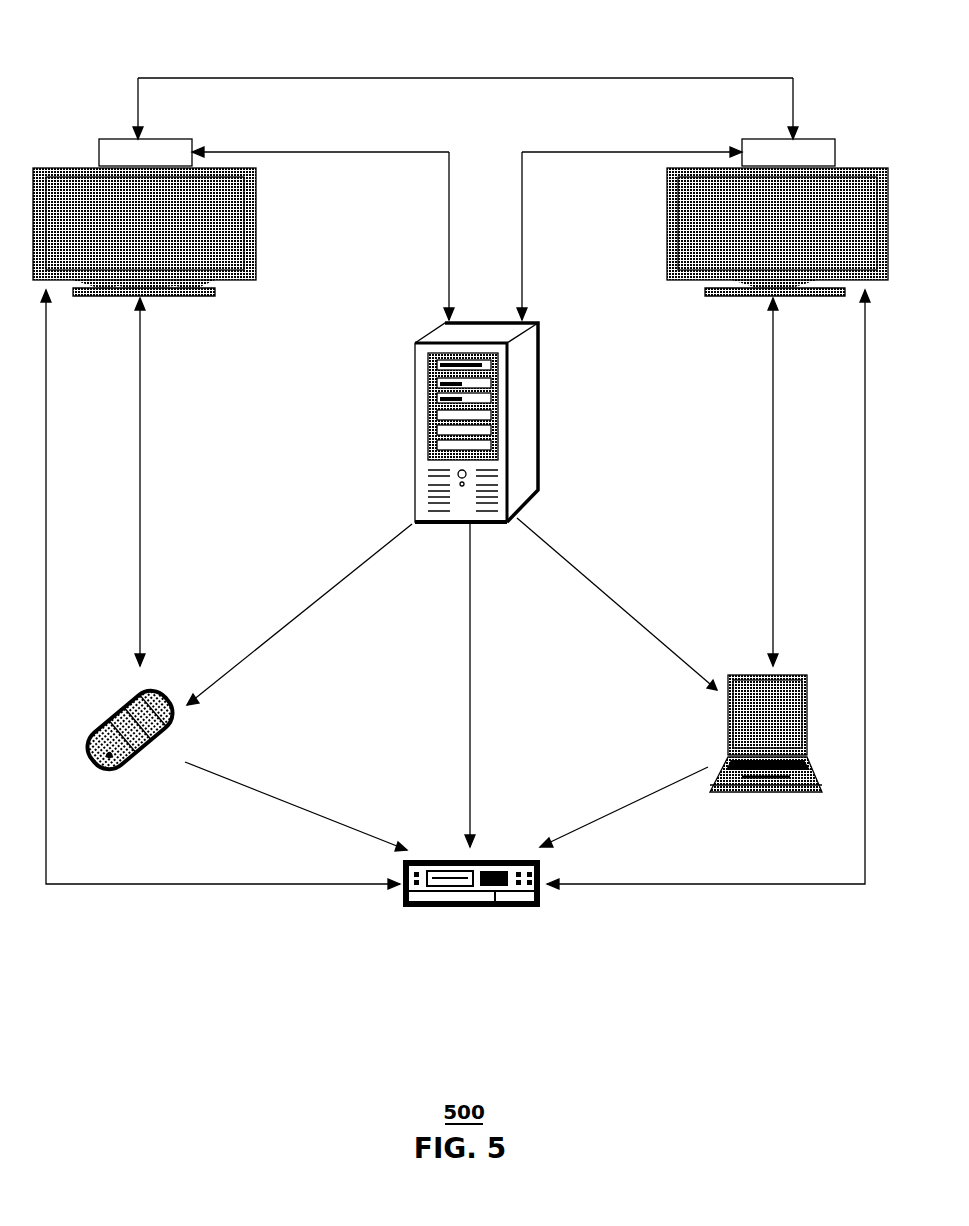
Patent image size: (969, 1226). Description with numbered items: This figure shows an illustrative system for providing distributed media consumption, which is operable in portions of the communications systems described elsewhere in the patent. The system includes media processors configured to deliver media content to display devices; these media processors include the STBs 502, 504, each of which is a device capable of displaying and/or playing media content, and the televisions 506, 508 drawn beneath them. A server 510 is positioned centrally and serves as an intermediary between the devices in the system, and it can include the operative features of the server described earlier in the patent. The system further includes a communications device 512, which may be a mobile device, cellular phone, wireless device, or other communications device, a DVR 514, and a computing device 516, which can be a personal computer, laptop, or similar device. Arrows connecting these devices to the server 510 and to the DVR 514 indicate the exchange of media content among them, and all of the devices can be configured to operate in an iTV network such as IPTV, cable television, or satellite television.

The STB 502 is at (145, 152).
The STB 504 is at (788, 152).
The television 506 is at (144, 232).
The television 508 is at (777, 232).
The server 510 is at (440, 422).
The communications device 512 is at (130, 746).
The DVR 514 is at (471, 904).
The computing device 516 is at (766, 753).